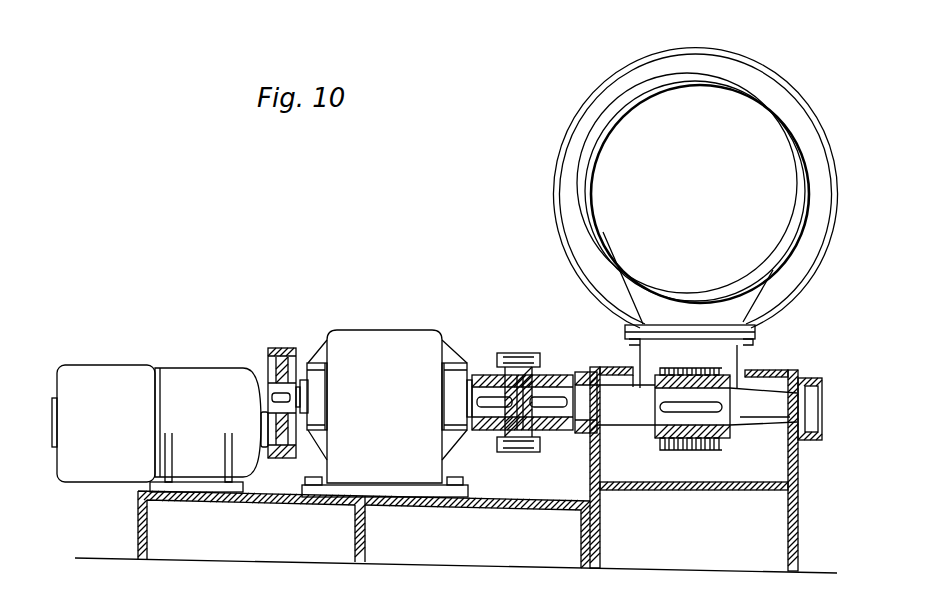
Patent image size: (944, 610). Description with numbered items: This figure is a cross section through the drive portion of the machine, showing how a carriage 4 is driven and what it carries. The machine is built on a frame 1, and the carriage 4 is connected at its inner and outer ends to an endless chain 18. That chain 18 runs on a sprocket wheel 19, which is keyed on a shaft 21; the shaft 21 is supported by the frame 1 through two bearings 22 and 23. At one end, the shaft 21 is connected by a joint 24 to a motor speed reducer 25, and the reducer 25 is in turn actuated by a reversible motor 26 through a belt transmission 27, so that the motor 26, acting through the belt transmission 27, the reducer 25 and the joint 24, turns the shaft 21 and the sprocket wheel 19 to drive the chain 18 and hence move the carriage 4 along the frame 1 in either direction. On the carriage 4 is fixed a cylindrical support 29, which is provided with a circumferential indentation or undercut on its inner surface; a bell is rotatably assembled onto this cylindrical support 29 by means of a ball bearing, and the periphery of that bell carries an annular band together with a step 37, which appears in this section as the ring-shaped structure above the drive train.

The frame 1 is at (800, 527).
The carriage 4 is at (756, 333).
The endless chain 18 is at (683, 440).
The sprocket wheel 19 is at (655, 432).
The shaft 21 is at (772, 418).
The bearing 22 is at (585, 372).
The bearing 23 is at (807, 380).
The joint 24 is at (515, 353).
The motor speed reducer 25 is at (373, 335).
The reversible motor 26 is at (199, 382).
The belt transmission 27 is at (277, 348).
The cylindrical support 29 is at (618, 126).
The step 37 is at (560, 157).